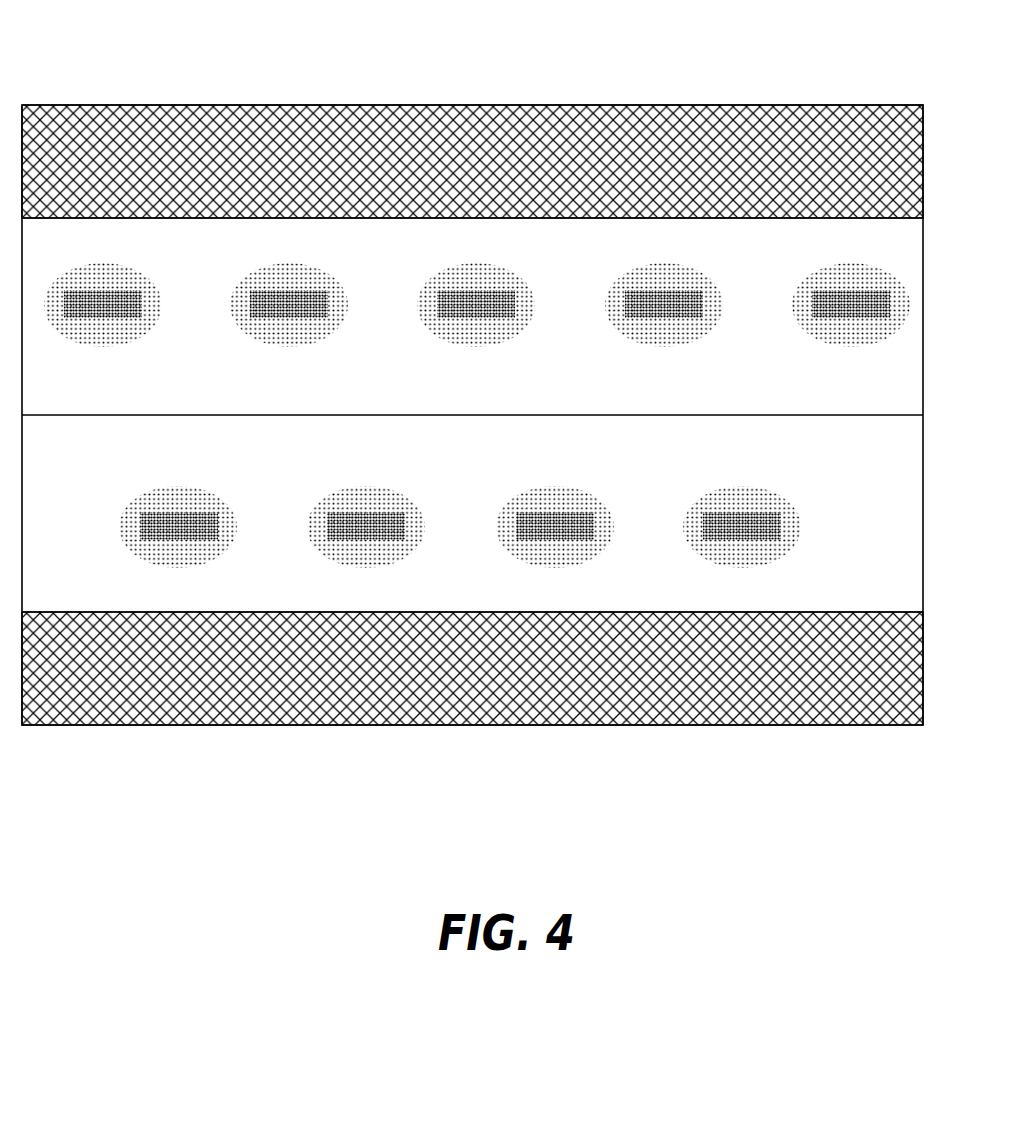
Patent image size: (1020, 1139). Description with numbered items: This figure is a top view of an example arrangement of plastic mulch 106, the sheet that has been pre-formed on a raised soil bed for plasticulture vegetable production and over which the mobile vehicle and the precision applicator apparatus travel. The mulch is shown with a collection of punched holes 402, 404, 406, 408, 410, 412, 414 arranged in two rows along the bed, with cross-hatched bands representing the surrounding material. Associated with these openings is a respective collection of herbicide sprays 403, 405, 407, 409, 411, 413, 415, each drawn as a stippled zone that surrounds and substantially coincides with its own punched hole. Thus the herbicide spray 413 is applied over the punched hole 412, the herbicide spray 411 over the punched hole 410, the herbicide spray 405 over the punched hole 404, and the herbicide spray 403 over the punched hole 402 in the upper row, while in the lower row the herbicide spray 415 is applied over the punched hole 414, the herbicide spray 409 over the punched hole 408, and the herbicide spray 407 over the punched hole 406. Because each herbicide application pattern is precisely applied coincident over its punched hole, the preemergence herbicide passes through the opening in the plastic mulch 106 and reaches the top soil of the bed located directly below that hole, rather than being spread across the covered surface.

The plastic mulch 106 is at (762, 270).
The punched hole 402 is at (690, 306).
The herbicide spray 403 is at (647, 283).
The punched hole 404 is at (502, 305).
The herbicide spray 405 is at (450, 278).
The punched hole 406 is at (733, 525).
The herbicide spray 407 is at (770, 547).
The punched hole 408 is at (533, 525).
The herbicide spray 409 is at (570, 547).
The punched hole 410 is at (316, 303).
The herbicide spray 411 is at (265, 280).
The punched hole 412 is at (118, 303).
The herbicide spray 413 is at (80, 280).
The punched hole 414 is at (168, 535).
The herbicide spray 415 is at (208, 553).